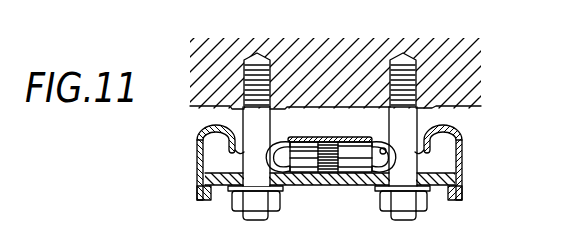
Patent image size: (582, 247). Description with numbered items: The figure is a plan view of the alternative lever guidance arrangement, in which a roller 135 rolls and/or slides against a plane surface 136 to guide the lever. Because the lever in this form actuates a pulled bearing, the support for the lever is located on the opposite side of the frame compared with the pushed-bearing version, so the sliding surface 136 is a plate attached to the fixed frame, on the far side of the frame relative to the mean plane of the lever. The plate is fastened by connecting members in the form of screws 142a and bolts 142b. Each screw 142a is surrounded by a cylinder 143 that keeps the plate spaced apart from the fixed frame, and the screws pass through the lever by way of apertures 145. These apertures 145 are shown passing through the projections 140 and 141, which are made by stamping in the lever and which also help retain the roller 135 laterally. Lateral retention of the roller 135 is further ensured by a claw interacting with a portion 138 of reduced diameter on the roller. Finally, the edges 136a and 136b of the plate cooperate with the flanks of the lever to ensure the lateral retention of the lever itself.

The roller 135 is at (310, 137).
The plane surface 136 is at (357, 178).
The edge 136a is at (197, 193).
The edge 136b is at (462, 191).
The portion of reduced diameter 138 is at (337, 137).
The projection 140 is at (278, 156).
The projection 141 is at (397, 145).
The screw 142a is at (413, 77).
The bolt 142b is at (428, 191).
The cylinder 143 is at (412, 121).
The aperture 145 is at (244, 150).